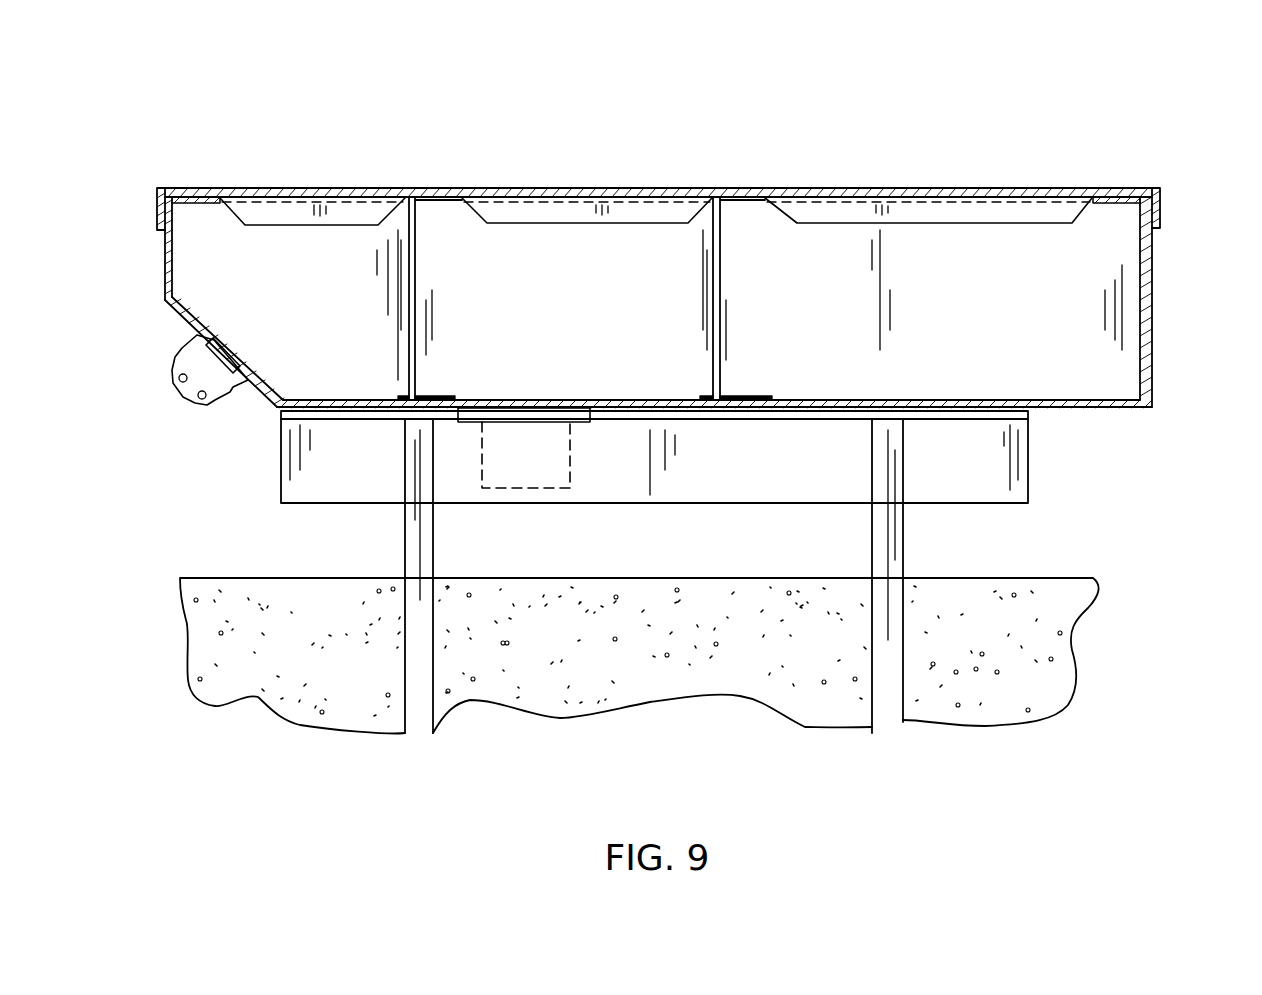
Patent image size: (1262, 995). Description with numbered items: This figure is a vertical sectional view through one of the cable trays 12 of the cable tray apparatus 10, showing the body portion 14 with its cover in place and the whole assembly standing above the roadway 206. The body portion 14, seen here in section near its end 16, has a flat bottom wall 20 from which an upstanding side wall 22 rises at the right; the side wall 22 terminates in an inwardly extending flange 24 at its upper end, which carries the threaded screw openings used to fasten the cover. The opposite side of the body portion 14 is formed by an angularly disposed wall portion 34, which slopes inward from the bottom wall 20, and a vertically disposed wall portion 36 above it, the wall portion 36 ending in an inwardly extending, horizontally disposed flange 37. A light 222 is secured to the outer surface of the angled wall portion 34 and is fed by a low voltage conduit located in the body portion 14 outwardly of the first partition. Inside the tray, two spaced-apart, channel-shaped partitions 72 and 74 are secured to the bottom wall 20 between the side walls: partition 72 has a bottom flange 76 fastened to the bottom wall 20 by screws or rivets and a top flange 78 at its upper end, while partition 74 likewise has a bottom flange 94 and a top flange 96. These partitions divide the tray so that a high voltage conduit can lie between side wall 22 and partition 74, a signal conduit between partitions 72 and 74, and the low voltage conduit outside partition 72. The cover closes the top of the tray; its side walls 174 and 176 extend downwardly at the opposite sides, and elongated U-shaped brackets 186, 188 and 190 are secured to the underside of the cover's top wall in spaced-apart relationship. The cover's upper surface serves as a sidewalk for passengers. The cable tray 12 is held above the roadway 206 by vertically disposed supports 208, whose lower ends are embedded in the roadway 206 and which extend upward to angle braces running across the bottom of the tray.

The cable tray apparatus 10 is at (872, 162).
The cable tray 12 is at (1163, 258).
The body portion 14 is at (1148, 330).
The end 16 is at (903, 189).
The bottom wall 20 is at (862, 397).
The side wall 22 is at (1152, 363).
The flange 24 is at (1117, 200).
The angularly disposed wall portion 34 is at (215, 343).
The vertically disposed wall portion 36 is at (177, 272).
The flange 37 is at (197, 203).
The partition 72 is at (413, 332).
The partition 74 is at (722, 326).
The bottom flange 76 is at (438, 394).
The top flange 78 is at (437, 198).
The bottom flange 94 is at (745, 394).
The top flange 96 is at (743, 197).
The side wall 174 is at (157, 216).
The side wall 176 is at (1153, 203).
The U-shaped bracket 186 is at (295, 213).
The U-shaped bracket 188 is at (532, 215).
The U-shaped bracket 190 is at (983, 212).
The roadway 206 is at (1047, 592).
The support 208 is at (422, 673).
The light 222 is at (212, 412).